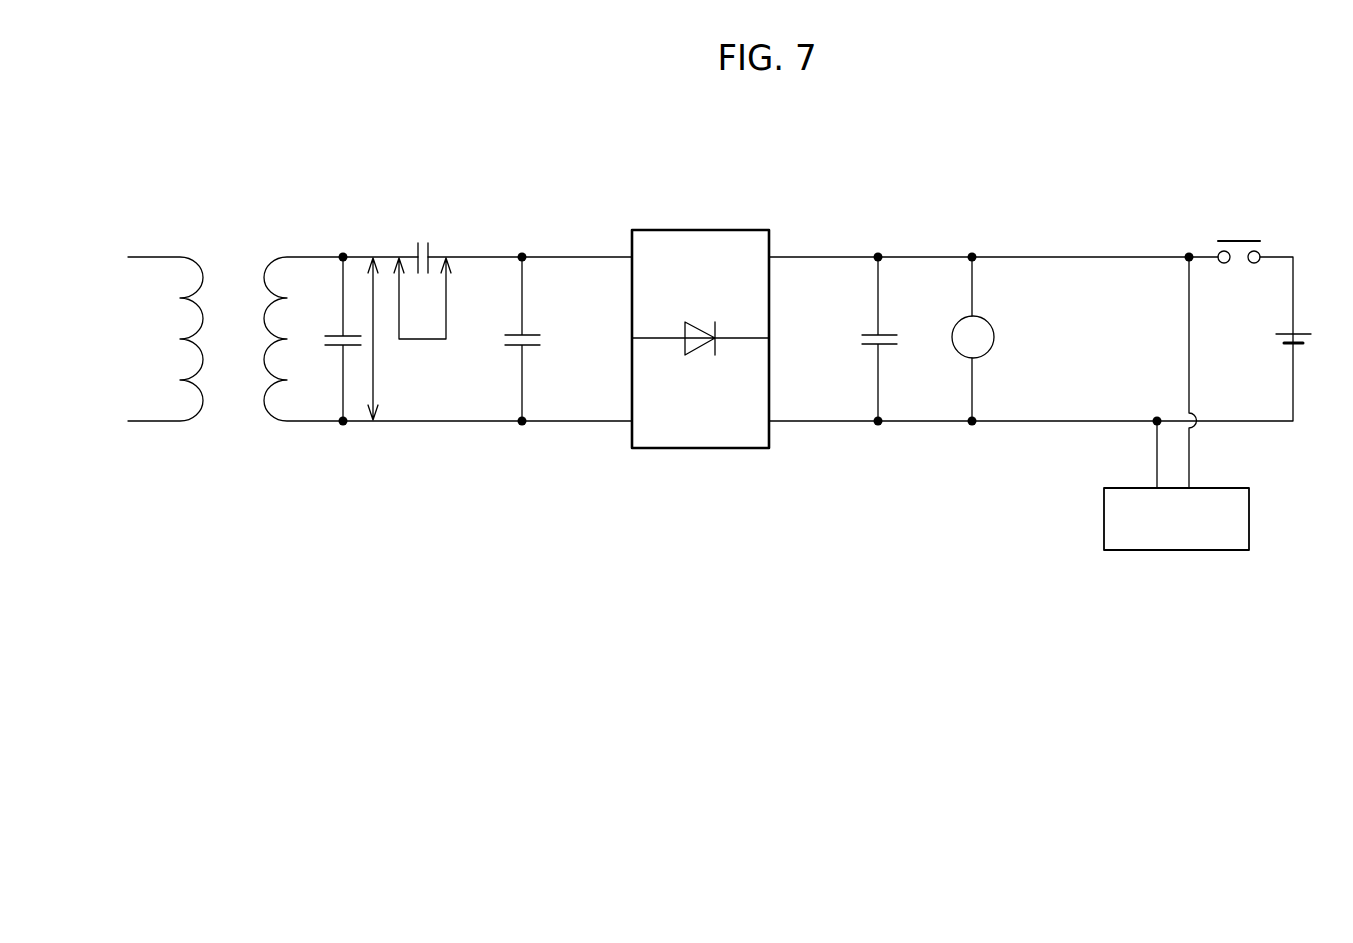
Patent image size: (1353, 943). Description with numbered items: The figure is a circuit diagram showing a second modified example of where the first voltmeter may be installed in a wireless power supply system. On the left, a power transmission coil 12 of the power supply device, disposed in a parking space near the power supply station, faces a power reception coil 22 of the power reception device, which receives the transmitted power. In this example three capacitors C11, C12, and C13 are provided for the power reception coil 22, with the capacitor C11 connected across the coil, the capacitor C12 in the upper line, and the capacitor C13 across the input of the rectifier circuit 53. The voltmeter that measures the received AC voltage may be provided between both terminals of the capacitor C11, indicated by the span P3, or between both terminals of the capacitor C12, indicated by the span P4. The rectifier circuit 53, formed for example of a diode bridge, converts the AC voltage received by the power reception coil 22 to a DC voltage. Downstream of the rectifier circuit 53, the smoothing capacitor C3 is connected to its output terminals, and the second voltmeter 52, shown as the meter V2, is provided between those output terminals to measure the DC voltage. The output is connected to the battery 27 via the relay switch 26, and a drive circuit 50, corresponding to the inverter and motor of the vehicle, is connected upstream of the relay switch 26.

The power transmission coil 12 is at (200, 268).
The power reception coil 22 is at (263, 366).
The capacitor C11 is at (338, 333).
The capacitor C12 is at (430, 250).
The capacitor C13 is at (528, 335).
The terminals of capacitor C11 P3 is at (387, 339).
The terminals of capacitor C12 P4 is at (438, 298).
The rectifier circuit 53 is at (717, 229).
The smoothing capacitor C3 is at (873, 332).
The voltage V2 is at (947, 378).
The second voltmeter 52 is at (961, 339).
The relay switch 26 is at (1233, 240).
The battery 27 is at (1283, 333).
The drive circuit 50 is at (1250, 518).